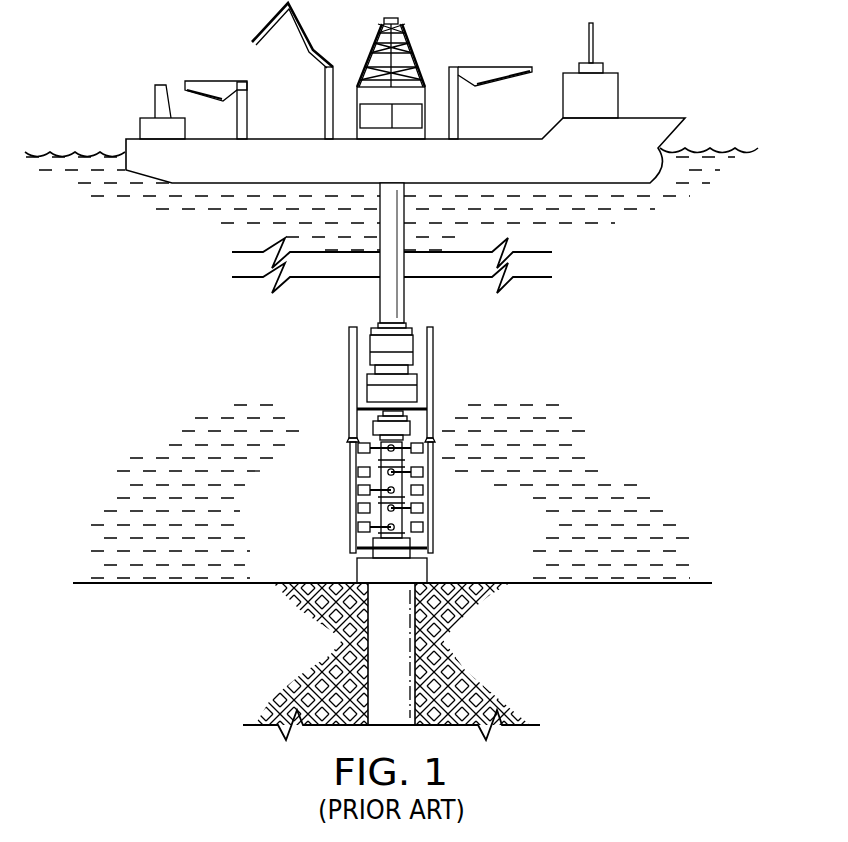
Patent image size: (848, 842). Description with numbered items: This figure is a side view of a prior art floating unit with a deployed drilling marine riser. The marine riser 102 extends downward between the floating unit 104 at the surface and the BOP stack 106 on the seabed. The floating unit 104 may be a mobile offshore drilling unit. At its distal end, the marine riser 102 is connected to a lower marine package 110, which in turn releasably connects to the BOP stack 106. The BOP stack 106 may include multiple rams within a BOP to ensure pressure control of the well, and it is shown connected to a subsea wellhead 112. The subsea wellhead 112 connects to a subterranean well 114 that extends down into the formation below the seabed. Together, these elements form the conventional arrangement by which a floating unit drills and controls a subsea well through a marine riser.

The marine riser 102 is at (392, 302).
The floating unit 104 is at (652, 118).
The BOP stack 106 is at (334, 442).
The lower marine package 110 is at (334, 330).
The subsea wellhead 112 is at (442, 563).
The subterranean well 114 is at (268, 665).